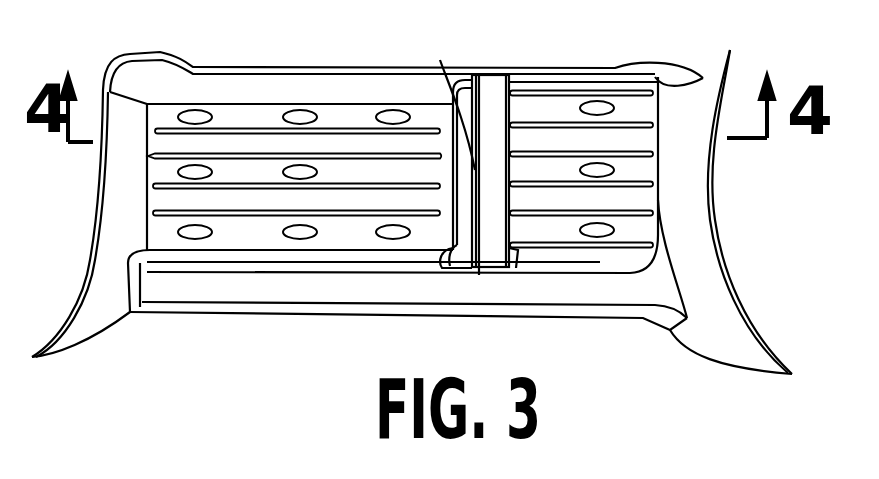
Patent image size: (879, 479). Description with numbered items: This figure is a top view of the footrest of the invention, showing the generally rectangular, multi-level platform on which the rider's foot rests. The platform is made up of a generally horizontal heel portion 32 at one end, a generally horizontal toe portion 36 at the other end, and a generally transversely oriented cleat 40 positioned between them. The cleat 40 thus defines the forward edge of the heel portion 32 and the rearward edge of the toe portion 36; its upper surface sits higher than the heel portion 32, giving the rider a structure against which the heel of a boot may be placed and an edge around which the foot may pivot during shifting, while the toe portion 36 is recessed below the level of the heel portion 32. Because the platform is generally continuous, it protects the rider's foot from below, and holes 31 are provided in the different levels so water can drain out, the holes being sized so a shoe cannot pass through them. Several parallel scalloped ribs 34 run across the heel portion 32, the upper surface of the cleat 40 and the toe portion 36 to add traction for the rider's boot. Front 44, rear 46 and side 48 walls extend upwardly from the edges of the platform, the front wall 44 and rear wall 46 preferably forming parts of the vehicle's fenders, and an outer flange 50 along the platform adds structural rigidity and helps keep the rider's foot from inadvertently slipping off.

The holes 31 is at (622, 110).
The heel portion 32 is at (558, 108).
The scalloped ribs 34 is at (157, 156).
The toe portion 36 is at (333, 230).
The cleat 40 is at (492, 110).
The front wall 44 is at (110, 233).
The rear wall 46 is at (700, 213).
The side wall 48 is at (247, 67).
The outer flange 50 is at (578, 296).